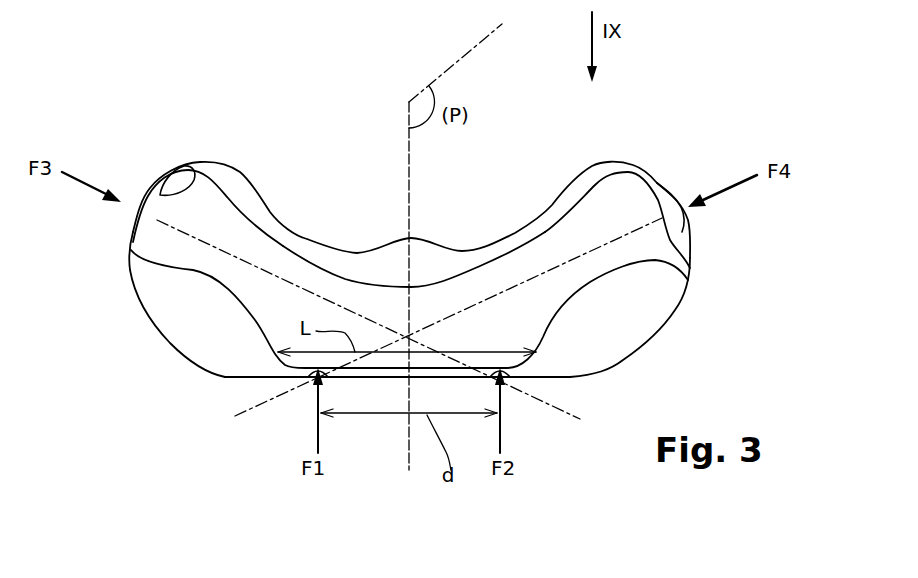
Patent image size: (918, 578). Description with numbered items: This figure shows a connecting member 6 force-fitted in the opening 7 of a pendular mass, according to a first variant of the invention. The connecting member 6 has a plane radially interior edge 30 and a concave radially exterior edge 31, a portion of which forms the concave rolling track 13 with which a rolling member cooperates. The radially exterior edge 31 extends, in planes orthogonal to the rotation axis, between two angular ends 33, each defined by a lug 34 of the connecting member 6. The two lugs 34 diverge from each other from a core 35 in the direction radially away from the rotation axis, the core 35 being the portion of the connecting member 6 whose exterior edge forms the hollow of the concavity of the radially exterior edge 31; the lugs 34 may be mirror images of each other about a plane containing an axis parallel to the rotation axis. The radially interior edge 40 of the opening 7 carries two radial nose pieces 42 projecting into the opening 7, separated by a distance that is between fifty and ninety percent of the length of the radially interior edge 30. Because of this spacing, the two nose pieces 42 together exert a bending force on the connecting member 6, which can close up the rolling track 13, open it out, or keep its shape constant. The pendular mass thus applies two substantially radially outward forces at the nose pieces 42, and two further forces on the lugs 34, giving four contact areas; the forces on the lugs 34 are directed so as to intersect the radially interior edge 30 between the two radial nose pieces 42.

The connecting member 6 is at (687, 283).
The opening 7 is at (184, 318).
The rolling track 13 is at (388, 287).
The radially interior edge 30 is at (384, 376).
The radially exterior edge 31 is at (445, 284).
The angular end 33 is at (183, 191).
The lug 34 is at (175, 240).
The core 35 is at (432, 342).
The radially interior edge of the opening 40 is at (571, 377).
The radial nose piece 42 is at (320, 371).